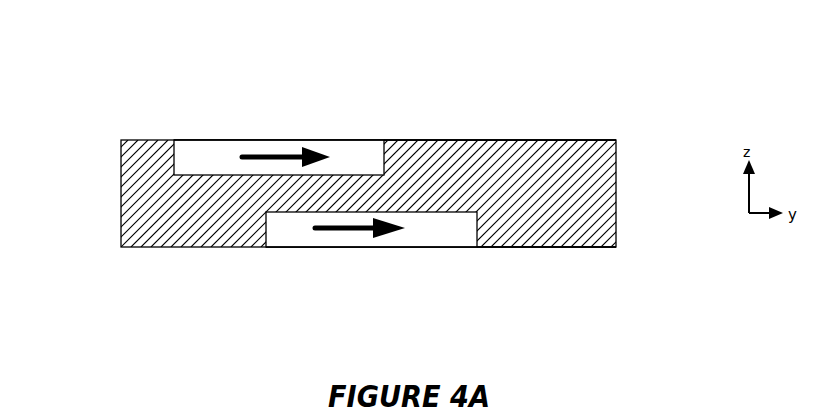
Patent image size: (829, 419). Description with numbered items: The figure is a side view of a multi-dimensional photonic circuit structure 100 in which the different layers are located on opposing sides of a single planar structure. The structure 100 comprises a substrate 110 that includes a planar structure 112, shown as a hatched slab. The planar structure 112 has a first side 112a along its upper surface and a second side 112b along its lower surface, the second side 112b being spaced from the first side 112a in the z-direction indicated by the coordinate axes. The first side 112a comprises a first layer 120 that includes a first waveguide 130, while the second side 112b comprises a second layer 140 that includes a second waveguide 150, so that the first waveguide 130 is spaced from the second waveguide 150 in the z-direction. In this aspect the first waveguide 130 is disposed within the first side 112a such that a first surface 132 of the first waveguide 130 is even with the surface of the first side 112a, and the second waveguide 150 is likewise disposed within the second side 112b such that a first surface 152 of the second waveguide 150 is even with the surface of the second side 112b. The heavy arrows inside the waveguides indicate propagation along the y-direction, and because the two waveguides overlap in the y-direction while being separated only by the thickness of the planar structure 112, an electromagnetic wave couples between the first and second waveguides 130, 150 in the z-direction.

The multi-dimensional photonic circuit structure 100 is at (650, 72).
The substrate 110 is at (103, 142).
The planar structure 112 is at (590, 217).
The first side 112a is at (540, 138).
The second side 112b is at (515, 248).
The first layer 120 is at (463, 122).
The first waveguide 130 is at (345, 157).
The first surface of the first waveguide 132 is at (220, 140).
The second layer 140 is at (590, 265).
The second waveguide 150 is at (298, 228).
The first surface of the second waveguide 152 is at (347, 247).